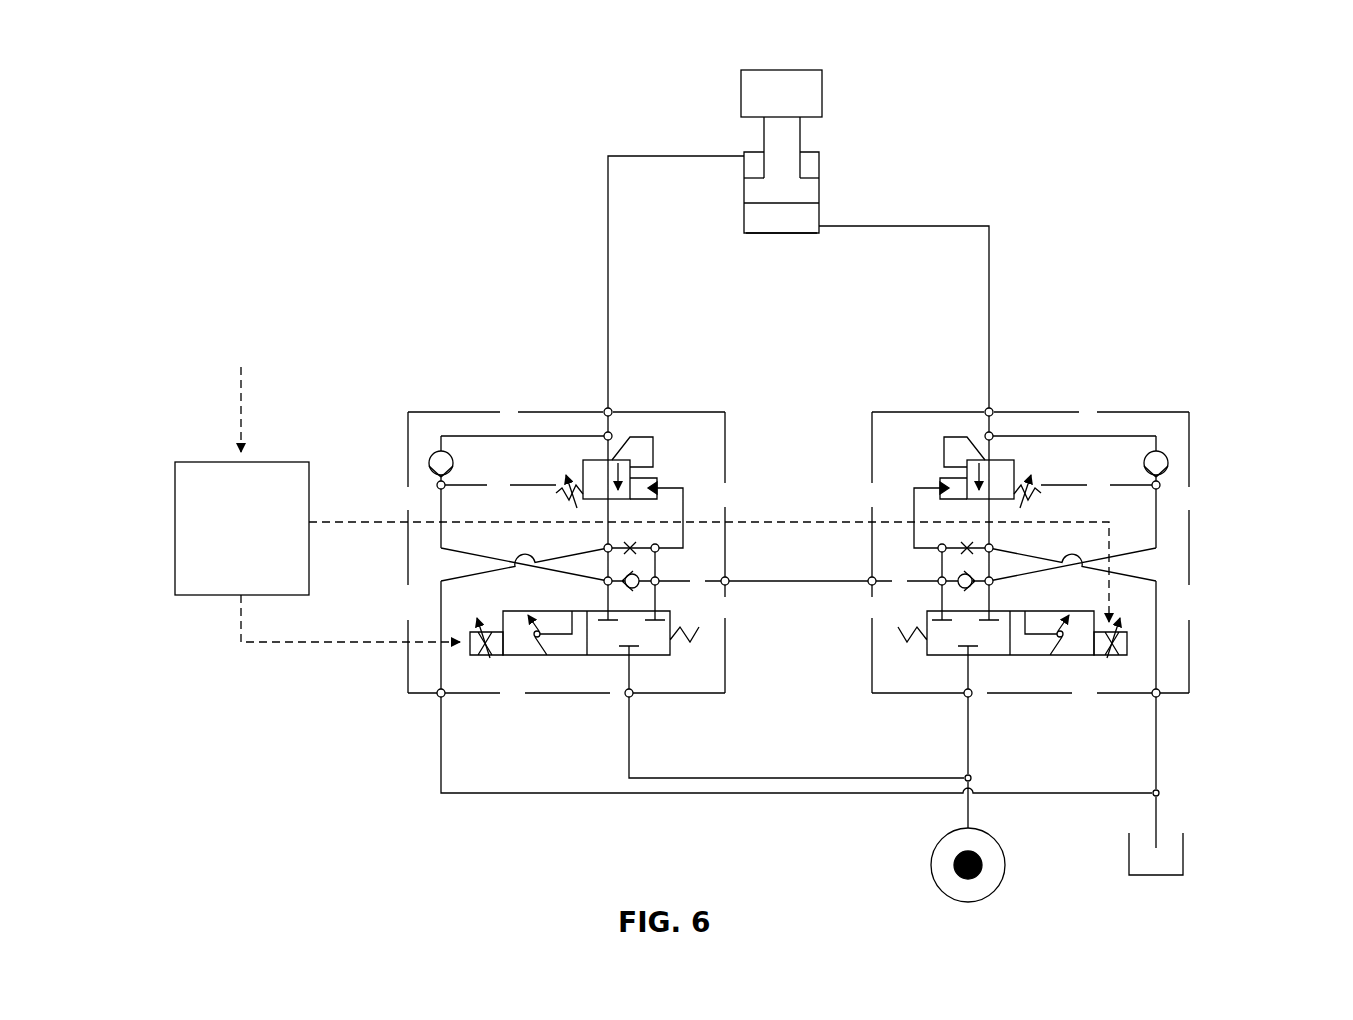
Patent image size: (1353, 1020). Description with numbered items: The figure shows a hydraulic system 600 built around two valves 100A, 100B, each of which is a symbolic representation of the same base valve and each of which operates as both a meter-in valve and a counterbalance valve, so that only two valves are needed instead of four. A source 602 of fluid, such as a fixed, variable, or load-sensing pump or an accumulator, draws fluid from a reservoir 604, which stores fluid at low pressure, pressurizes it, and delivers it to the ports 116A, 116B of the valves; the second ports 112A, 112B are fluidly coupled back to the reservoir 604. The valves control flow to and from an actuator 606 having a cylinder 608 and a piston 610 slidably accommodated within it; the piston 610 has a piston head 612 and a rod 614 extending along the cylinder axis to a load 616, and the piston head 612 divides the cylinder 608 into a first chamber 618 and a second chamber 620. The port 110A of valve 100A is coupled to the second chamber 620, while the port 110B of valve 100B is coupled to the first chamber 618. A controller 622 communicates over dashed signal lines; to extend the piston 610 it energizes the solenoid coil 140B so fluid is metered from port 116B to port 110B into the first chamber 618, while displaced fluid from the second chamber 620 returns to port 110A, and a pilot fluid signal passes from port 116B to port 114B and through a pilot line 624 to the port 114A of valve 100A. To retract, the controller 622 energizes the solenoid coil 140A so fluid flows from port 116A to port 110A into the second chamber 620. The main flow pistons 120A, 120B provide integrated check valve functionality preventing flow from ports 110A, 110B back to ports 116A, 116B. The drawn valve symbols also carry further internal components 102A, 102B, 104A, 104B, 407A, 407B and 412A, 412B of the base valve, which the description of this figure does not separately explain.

The hydraulic system 600 is at (333, 82).
The source of fluid 602 is at (1005, 862).
The reservoir of fluid 604 is at (1185, 855).
The actuator 606 is at (740, 127).
The cylinder 608 is at (744, 219).
The piston 610 is at (753, 163).
The piston head 612 is at (803, 192).
The rod 614 is at (800, 135).
The load 616 is at (812, 62).
The first chamber 618 is at (809, 221).
The second chamber 620 is at (809, 163).
The controller 622 is at (642, 504).
The pilot line 624 is at (813, 578).
The valve 100A is at (465, 410).
The valve 100B is at (1180, 410).
The first pilot valve 102A is at (573, 462).
The second pilot valve 102B is at (1026, 462).
The first main control valve 104A is at (574, 660).
The second main control valve 104B is at (930, 660).
The port 110A is at (603, 408).
The port 110B is at (997, 408).
The second port 112A is at (438, 698).
The second port 112B is at (1168, 700).
The port 114A is at (733, 576).
The port 114B is at (863, 576).
The port 116A is at (633, 698).
The port 116B is at (962, 699).
The main flow piston 120A is at (423, 458).
The main flow piston 120B is at (1174, 465).
The solenoid coil 140A is at (464, 630).
The solenoid coil 140B is at (1134, 645).
The first load check valve 407A is at (647, 590).
The second load check valve 407B is at (950, 590).
The first orifice 412A is at (634, 543).
The second orifice 412B is at (963, 543).